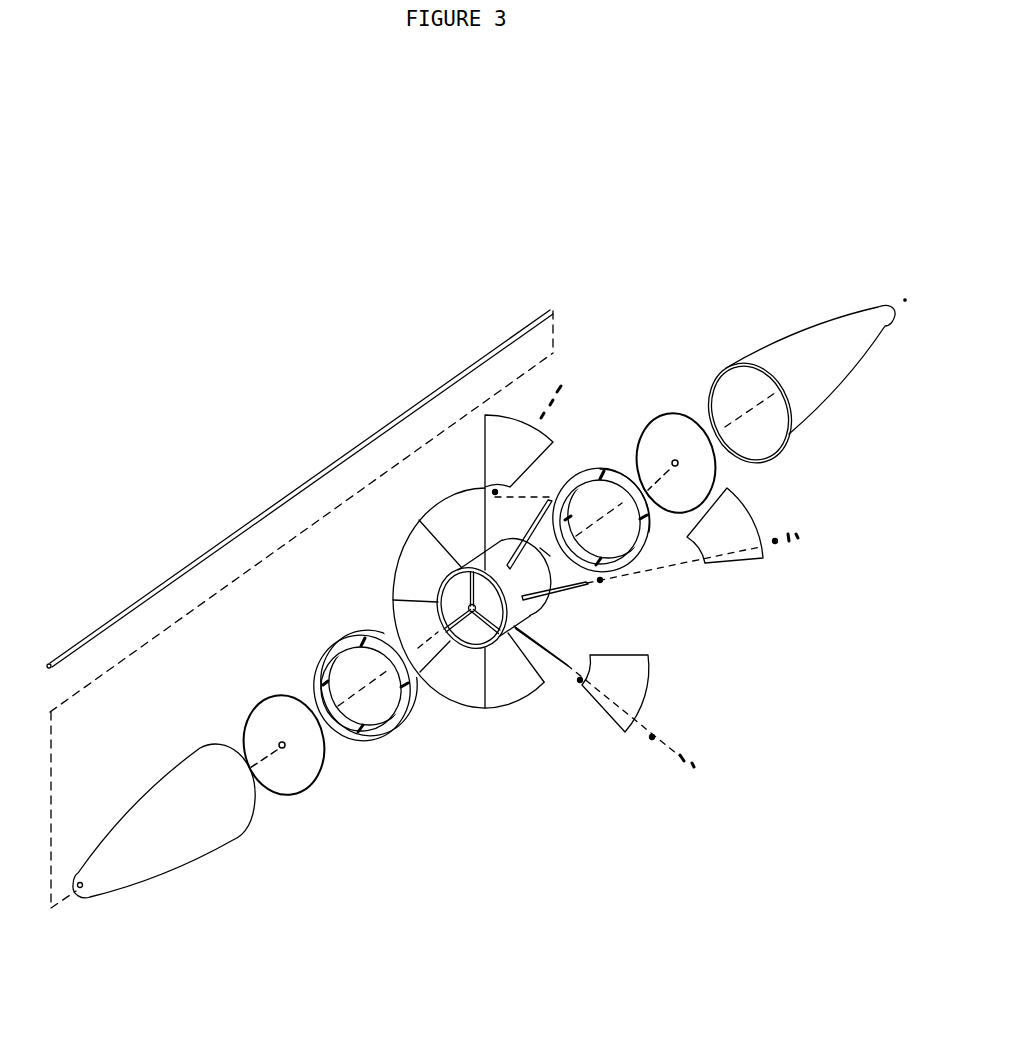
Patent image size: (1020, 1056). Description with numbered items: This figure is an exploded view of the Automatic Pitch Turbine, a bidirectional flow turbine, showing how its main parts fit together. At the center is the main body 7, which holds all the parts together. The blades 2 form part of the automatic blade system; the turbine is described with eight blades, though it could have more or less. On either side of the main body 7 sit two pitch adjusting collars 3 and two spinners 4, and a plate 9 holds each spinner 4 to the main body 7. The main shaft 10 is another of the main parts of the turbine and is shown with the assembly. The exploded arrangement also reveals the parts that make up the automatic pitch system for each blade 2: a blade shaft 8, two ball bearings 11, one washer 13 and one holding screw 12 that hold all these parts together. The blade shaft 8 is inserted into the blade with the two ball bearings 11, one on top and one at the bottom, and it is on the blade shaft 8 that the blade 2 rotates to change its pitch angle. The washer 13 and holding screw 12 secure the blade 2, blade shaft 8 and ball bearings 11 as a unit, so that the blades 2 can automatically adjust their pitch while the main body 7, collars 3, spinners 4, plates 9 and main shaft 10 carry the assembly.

The blade 2 is at (380, 592).
The pitch adjusting collar 3 is at (403, 712).
The spinner 4 is at (192, 868).
The main body 7 is at (470, 654).
The blade shaft 8 is at (525, 654).
The plate 9 is at (267, 720).
The main shaft 10 is at (256, 496).
The ball bearing 11 is at (482, 484).
The holding screw 12 is at (557, 380).
The washer 13 is at (790, 541).